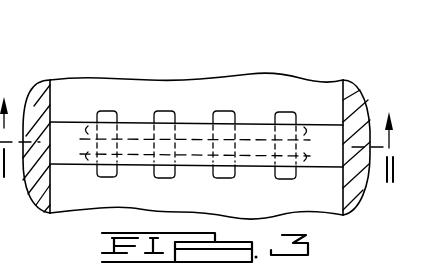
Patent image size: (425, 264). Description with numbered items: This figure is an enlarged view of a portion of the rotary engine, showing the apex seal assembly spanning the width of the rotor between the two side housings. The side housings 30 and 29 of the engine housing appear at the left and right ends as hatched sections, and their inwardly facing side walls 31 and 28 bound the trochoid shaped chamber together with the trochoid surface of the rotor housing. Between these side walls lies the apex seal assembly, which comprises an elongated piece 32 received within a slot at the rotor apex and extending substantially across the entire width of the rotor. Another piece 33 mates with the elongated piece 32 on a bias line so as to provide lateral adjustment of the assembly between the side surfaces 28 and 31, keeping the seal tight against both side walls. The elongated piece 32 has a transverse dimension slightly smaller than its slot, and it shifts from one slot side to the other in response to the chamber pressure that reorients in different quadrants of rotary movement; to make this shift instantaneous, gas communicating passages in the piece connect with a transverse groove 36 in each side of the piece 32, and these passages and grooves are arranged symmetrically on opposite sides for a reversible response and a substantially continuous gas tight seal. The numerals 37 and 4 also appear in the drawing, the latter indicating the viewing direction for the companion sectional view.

The inwardly facing side wall 28 is at (343, 86).
The side housing 29 is at (356, 100).
The side housing 30 is at (40, 94).
The inwardly facing side wall 31 is at (52, 100).
The elongated piece 32 is at (318, 143).
The piece 33 is at (161, 65).
The transverse groove 36 is at (259, 67).
The lugs 37 is at (174, 176).
The section line 4- 4 is at (209, 120).